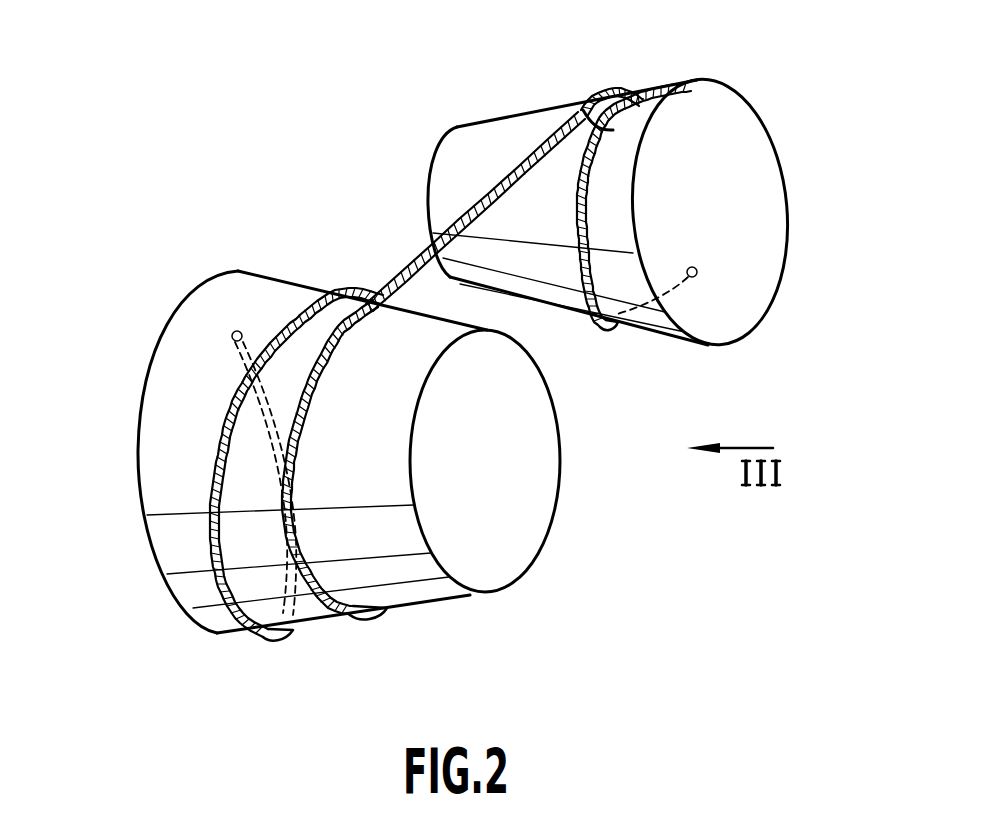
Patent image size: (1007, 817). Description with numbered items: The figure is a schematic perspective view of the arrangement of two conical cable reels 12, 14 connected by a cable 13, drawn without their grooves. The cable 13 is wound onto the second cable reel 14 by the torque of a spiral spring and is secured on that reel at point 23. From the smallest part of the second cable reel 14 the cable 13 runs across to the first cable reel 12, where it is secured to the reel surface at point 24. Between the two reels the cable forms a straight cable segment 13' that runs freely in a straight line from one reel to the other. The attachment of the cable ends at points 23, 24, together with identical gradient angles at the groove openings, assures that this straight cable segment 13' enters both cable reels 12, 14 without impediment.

The cable reel 12 is at (730, 108).
The second cable reel 14 is at (170, 547).
The cable 13 is at (367, 341).
The straight cable segment 13' is at (439, 211).
The point 23 is at (233, 344).
The point 24 is at (698, 275).